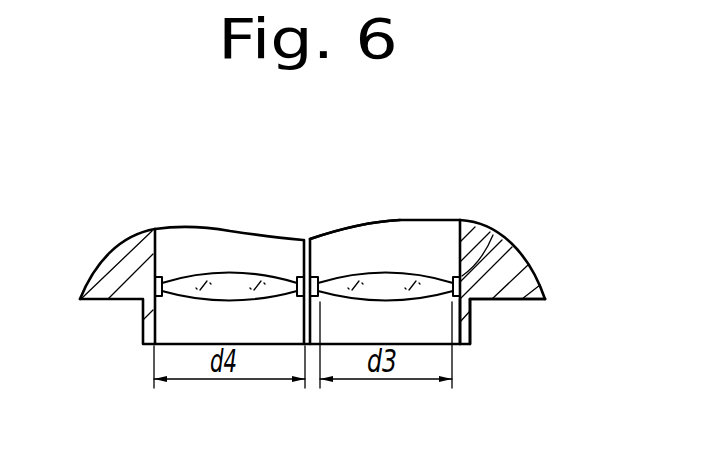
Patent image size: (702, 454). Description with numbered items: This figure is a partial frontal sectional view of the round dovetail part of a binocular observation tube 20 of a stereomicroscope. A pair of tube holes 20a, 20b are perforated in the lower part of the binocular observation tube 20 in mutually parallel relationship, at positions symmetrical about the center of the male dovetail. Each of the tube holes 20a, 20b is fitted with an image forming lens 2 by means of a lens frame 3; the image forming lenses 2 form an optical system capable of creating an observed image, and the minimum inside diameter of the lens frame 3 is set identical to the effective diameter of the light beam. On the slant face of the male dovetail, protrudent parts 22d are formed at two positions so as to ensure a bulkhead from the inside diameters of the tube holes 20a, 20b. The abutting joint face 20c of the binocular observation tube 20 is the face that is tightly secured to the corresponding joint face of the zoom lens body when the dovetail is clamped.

The binocular observation tube 20 is at (135, 260).
The tube hole 20a is at (234, 253).
The tube hole 20b is at (364, 247).
The image forming lens 2 is at (395, 282).
The lens frame 3 is at (493, 235).
The abutting joint face 20c is at (510, 300).
The protrudent part 22d is at (473, 310).